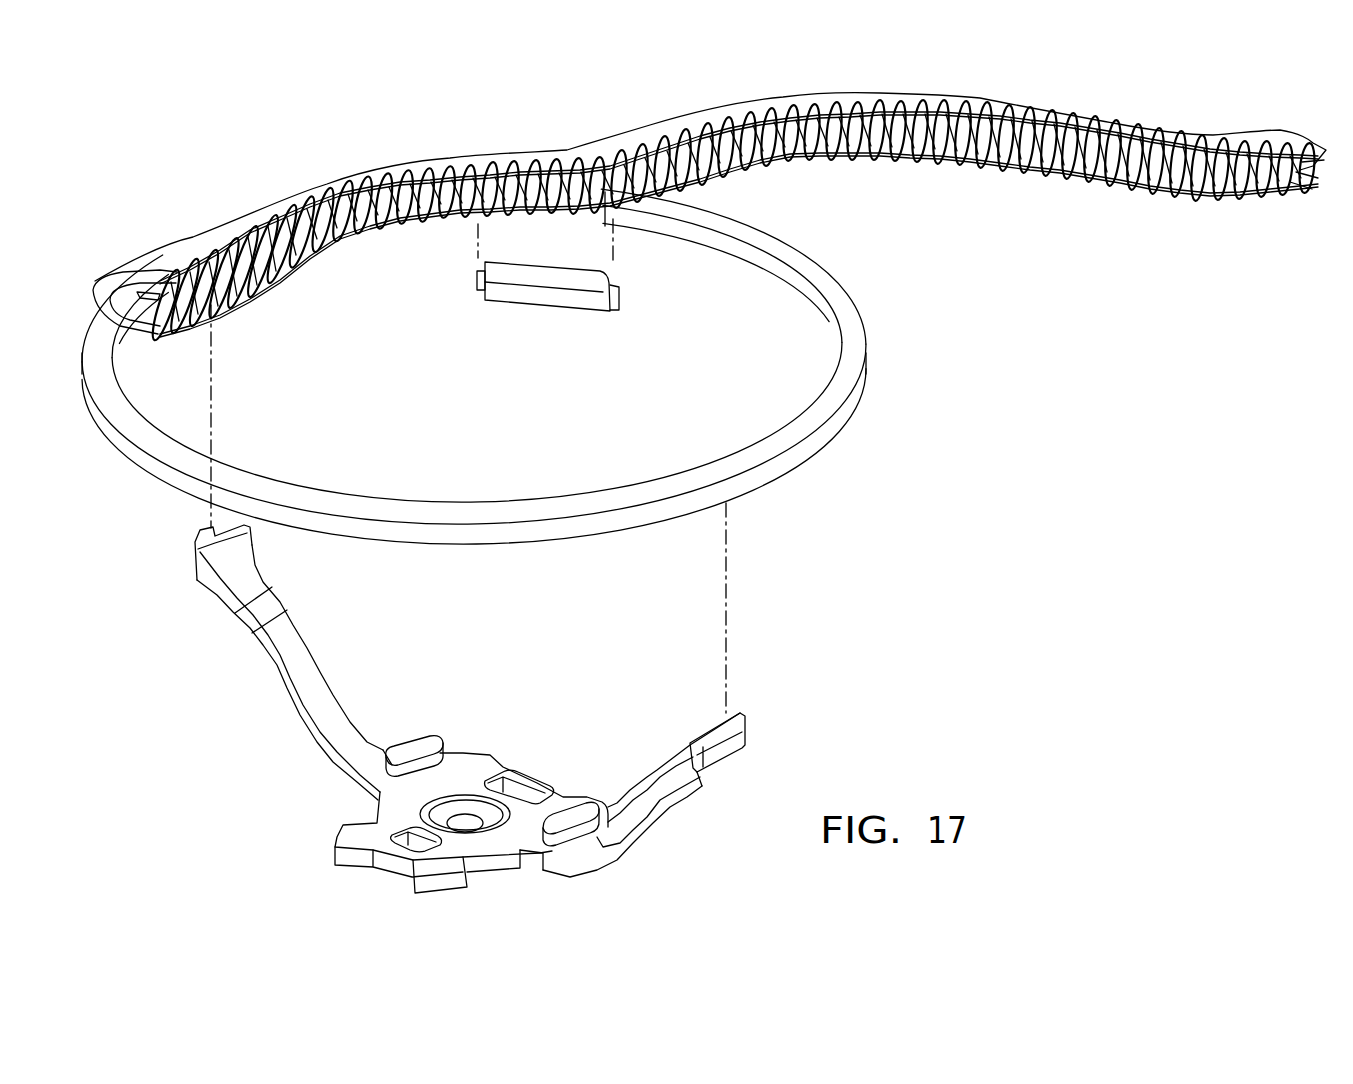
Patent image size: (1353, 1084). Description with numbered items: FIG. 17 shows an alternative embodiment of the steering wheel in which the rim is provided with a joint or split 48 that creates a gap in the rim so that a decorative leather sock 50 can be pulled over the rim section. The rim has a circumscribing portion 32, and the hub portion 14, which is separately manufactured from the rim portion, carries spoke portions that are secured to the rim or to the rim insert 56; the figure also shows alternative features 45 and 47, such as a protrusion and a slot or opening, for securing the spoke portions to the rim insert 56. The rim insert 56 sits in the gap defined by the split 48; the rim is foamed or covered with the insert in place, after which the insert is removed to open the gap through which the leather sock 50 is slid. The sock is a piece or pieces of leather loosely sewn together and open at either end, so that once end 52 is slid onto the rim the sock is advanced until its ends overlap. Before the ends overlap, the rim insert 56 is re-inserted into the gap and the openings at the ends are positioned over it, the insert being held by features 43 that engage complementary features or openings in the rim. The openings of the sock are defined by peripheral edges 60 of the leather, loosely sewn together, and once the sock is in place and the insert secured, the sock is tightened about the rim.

The hub portion 14 is at (433, 690).
The circumscribing portion 32 is at (850, 332).
The features 43 is at (478, 282).
The alternative feature 45 is at (205, 540).
The alternative feature 47 is at (232, 300).
The joint or split 48 is at (436, 262).
The leather sock 50 is at (693, 247).
The end 52 is at (143, 253).
The rim insert 56 is at (547, 321).
The peripheral edges 60 is at (290, 215).